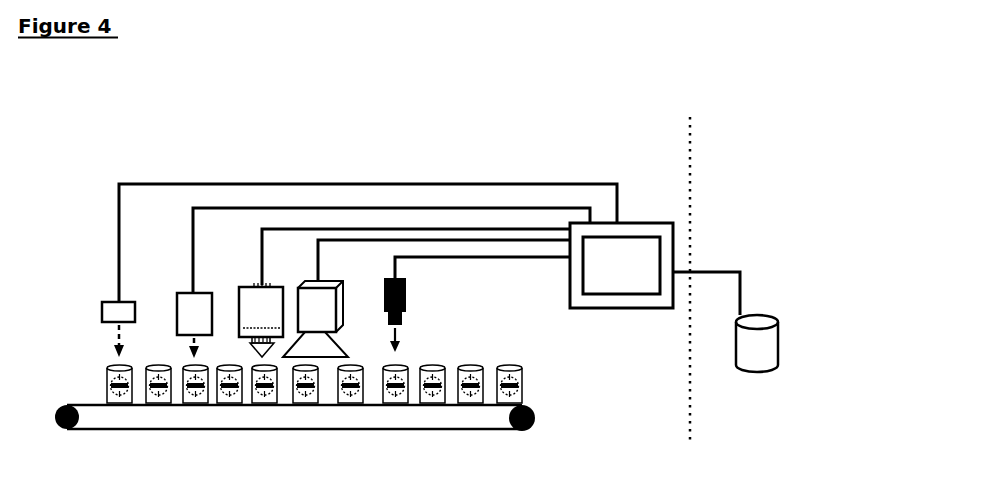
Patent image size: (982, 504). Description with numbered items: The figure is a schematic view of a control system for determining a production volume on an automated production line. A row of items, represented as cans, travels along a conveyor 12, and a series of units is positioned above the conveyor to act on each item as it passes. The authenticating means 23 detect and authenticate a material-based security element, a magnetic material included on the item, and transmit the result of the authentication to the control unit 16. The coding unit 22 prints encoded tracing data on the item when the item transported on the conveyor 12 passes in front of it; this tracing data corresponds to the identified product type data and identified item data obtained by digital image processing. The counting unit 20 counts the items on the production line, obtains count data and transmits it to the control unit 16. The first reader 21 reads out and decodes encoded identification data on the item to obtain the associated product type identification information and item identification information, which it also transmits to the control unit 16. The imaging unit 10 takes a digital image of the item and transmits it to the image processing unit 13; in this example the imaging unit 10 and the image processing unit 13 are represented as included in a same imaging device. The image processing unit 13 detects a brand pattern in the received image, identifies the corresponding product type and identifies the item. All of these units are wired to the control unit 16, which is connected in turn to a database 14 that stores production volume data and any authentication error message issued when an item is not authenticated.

The imaging unit 10 is at (420, 315).
The image processing unit 13 is at (420, 315).
The conveyor 12 is at (156, 434).
The database 14 is at (757, 308).
The control unit 16 is at (621, 265).
The counting unit 20 is at (261, 320).
The first reader 21 is at (315, 319).
The coding unit 22 is at (194, 325).
The authenticating means 23 is at (118, 329).